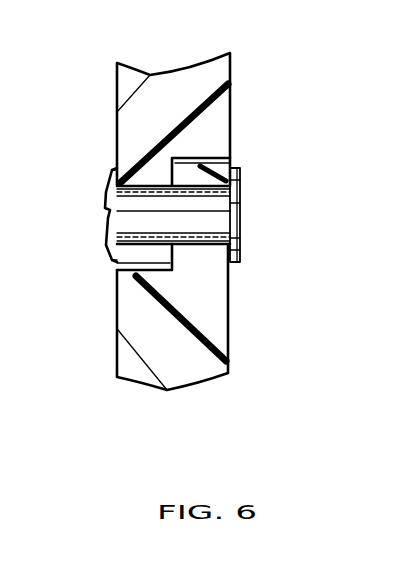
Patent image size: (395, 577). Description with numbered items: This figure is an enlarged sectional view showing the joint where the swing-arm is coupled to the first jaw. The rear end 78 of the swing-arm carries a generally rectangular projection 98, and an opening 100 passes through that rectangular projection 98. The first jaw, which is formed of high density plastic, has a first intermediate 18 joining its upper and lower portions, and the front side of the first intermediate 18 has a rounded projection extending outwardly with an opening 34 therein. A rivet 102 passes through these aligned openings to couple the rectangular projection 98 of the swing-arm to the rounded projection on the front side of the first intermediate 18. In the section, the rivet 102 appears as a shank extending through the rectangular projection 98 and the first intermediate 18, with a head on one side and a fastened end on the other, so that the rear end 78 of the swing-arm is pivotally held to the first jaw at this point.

The rear end 78 is at (125, 113).
The opening 100 is at (124, 163).
The opening 34 is at (197, 245).
The rivet 102 is at (240, 222).
The rectangular projection 98 is at (147, 245).
The first intermediate 18 is at (145, 327).